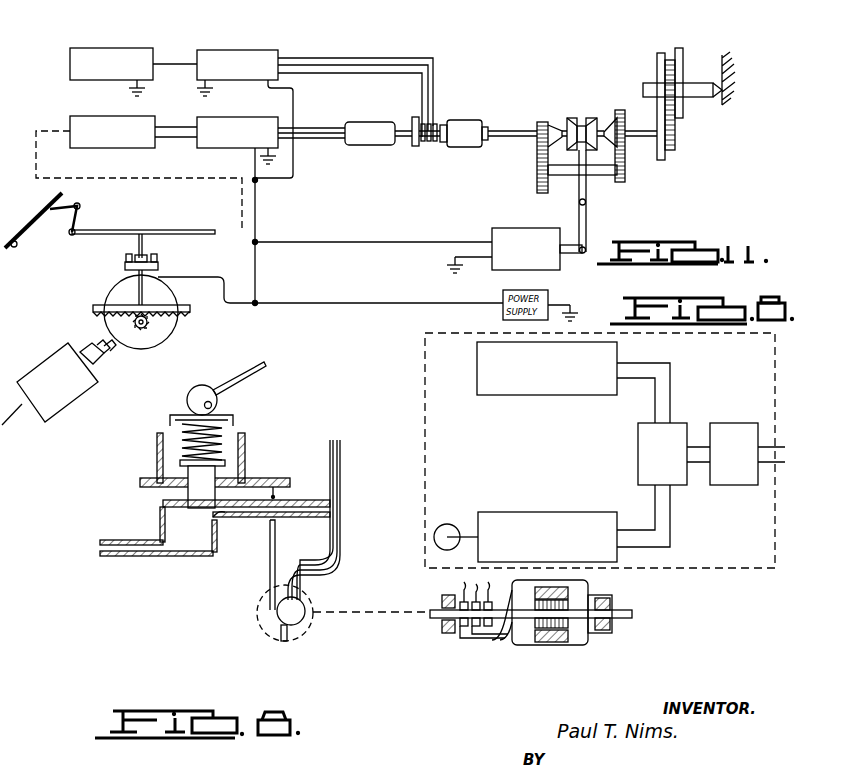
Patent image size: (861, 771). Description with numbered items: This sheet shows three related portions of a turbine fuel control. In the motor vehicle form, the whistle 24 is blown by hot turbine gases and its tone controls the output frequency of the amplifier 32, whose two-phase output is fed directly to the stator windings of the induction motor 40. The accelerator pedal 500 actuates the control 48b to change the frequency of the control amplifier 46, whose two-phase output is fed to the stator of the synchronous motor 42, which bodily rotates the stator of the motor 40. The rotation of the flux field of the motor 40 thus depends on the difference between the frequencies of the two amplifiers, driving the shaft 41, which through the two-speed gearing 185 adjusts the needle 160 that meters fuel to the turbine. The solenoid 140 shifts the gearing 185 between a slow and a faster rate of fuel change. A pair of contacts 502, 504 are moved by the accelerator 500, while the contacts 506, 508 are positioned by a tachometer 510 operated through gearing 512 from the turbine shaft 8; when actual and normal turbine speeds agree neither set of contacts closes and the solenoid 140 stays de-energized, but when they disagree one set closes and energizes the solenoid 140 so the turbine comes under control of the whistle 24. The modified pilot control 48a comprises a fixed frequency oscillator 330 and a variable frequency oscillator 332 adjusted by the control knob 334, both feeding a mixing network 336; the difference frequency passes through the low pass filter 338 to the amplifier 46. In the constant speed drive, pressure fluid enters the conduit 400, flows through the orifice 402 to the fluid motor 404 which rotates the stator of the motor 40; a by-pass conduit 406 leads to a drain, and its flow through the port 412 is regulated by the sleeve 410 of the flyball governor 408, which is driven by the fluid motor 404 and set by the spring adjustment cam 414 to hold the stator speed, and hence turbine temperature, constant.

In FIG. 11, the whistle 24 is at (122, 48).
In FIG. 11, the amplifier 32 is at (240, 50).
In FIG. 11, the control 48b is at (96, 106).
In FIG. 11, the control amplifier 46 is at (237, 118).
In FIG. 11, the synchronous motor 42 is at (360, 122).
In FIG. 11, the induction motor 40 is at (462, 120).
In FIG. 6, the induction motor 40 is at (548, 645).
In FIG. 11, the rotor-driven shaft 41 is at (516, 114).
In FIG. 11, the two-speed gearing 185 is at (595, 104).
In FIG. 11, the needle 160 is at (703, 97).
In FIG. 11, the solenoid 140 is at (512, 228).
In FIG. 11, the accelerator pedal 500 is at (30, 226).
In FIG. 11, the contact 502 is at (138, 250).
In FIG. 11, the contact 504 is at (153, 255).
In FIG. 11, the contact 506 is at (126, 259).
In FIG. 11, the contact 508 is at (158, 268).
In FIG. 11, the tachometer 510 is at (125, 293).
In FIG. 11, the gearing 512 is at (60, 358).
In FIG. 11, the turbine shaft 8 is at (10, 420).
In FIG. 8, the pilot control 48a is at (453, 380).
In FIG. 8, the fixed frequency oscillator 330 is at (605, 354).
In FIG. 8, the variable frequency oscillator 332 is at (578, 493).
In FIG. 8, the control knob 334 is at (434, 535).
In FIG. 8, the mixing network 336 is at (653, 440).
In FIG. 8, the low pass filter 338 is at (750, 483).
In FIG. 6, the spring adjustment cam 414 is at (188, 392).
In FIG. 6, the governor 408 is at (252, 428).
In FIG. 6, the sleeve 410 is at (195, 488).
In FIG. 6, the by-pass conduit 406 is at (312, 470).
In FIG. 6, the port 412 is at (218, 518).
In FIG. 6, the conduit 400 is at (340, 442).
In FIG. 6, the orifice 402 is at (340, 466).
In FIG. 6, the fluid motor 404 is at (312, 612).